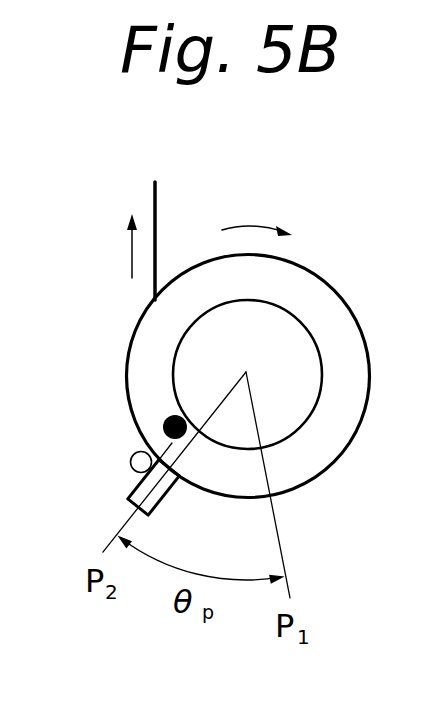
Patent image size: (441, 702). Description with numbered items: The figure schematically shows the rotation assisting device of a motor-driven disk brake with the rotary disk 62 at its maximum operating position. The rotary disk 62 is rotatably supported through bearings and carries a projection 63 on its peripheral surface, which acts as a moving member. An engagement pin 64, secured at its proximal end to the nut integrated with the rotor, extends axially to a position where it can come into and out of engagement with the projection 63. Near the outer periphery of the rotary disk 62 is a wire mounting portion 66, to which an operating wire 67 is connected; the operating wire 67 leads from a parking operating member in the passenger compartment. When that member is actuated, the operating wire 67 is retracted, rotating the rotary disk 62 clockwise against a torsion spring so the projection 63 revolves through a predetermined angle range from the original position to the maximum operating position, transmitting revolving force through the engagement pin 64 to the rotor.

The rotary disk 62 is at (292, 285).
The projection 63 is at (170, 492).
The engagement pin 64 is at (130, 462).
The wire mounting portion 66 is at (165, 420).
The operating wire 67 is at (155, 230).